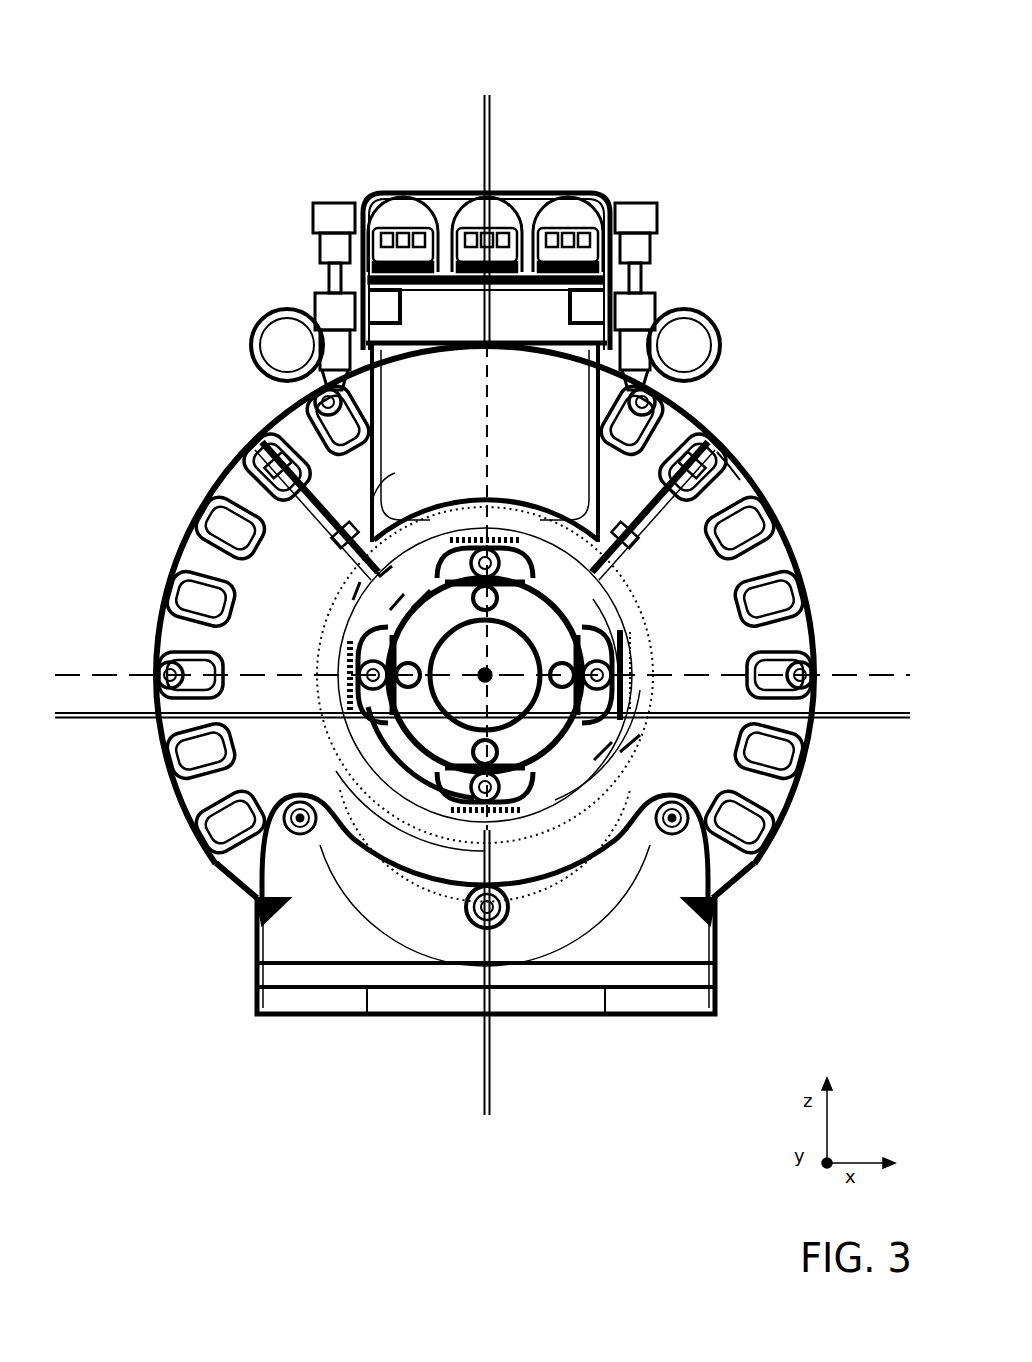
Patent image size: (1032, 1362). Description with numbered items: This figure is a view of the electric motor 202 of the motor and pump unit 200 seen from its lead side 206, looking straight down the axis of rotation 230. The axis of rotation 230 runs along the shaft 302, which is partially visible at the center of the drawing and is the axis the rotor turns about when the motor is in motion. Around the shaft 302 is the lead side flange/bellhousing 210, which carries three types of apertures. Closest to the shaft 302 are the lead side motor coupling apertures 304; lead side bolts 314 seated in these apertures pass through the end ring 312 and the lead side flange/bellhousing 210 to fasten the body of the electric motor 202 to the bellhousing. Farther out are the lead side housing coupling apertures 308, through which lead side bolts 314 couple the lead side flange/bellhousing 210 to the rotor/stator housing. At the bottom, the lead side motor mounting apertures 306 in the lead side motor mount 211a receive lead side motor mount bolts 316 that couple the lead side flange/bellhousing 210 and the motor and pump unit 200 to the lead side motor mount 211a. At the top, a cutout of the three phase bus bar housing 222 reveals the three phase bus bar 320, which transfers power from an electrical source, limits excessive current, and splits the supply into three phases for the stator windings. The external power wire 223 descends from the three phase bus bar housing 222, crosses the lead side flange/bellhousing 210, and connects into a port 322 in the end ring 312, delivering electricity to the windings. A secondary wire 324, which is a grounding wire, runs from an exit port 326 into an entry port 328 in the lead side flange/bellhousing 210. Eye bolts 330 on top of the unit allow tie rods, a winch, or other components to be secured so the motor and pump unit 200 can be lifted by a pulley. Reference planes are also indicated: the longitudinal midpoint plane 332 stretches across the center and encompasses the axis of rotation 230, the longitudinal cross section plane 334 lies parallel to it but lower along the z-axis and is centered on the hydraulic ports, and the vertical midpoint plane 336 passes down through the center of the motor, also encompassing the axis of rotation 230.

The motor and pump unit 200 is at (356, 82).
The electric motor 202 is at (240, 500).
The lead side 206 is at (504, 1257).
The lead side flange/bellhousing 210 is at (478, 1110).
The lead side motor mount 211a is at (700, 940).
The three phase bus bar housing 222 is at (523, 183).
The external power wire 223 is at (717, 452).
The axis of rotation 230 is at (485, 675).
The shaft 302 is at (485, 618).
The lead side motor coupling apertures 304 is at (520, 540).
The lead side motor mounting apertures 306 is at (290, 836).
The lead side housing coupling apertures 308 is at (316, 401).
The end ring 312 is at (555, 757).
The lead side bolts 314 is at (873, 690).
The lead side motor mount bolts 316 is at (312, 828).
The three phase bus bar 320 is at (575, 197).
The port 322 is at (612, 578).
The secondary wire 324 is at (401, 471).
The exit port 326 is at (352, 558).
The entry port 328 is at (282, 465).
The eye bolts 330 is at (283, 310).
The longitudinal midpoint plane 332 is at (100, 672).
The longitudinal cross section plane 334 is at (135, 717).
The vertical midpoint plane 336 is at (487, 92).